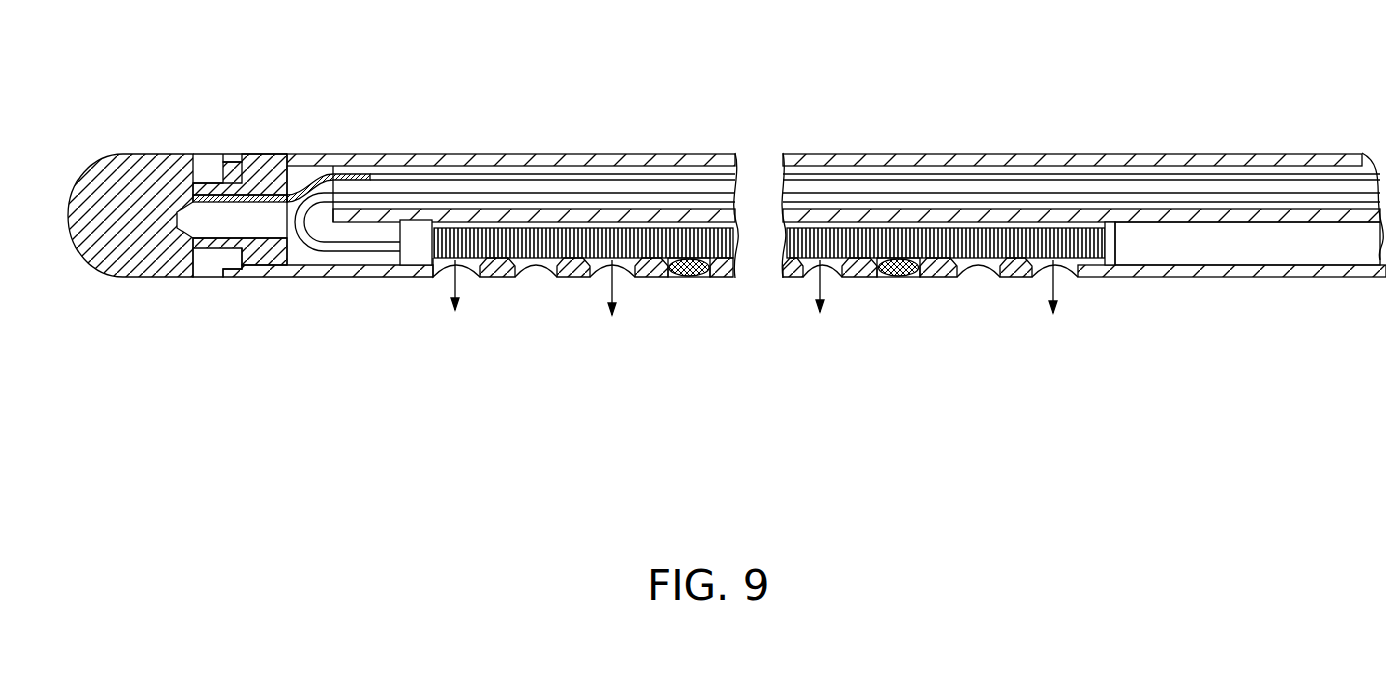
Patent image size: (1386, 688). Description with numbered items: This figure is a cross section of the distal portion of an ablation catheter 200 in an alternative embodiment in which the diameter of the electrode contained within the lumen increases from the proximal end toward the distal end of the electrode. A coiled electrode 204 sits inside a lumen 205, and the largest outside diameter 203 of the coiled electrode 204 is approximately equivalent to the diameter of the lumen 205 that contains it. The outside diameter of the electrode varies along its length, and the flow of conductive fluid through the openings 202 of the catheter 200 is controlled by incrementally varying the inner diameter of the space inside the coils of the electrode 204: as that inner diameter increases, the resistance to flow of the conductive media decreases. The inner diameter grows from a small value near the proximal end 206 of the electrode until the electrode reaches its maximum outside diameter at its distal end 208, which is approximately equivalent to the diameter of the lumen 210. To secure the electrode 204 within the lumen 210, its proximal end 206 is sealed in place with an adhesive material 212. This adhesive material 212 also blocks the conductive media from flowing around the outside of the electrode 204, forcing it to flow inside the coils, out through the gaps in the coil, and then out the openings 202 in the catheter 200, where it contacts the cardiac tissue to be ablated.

The ablation catheter 200 is at (674, 100).
The openings 202 is at (977, 280).
The largest outside diameter 203 is at (440, 267).
The coiled electrode 204 is at (726, 252).
The lumen 205 is at (592, 227).
The proximal end 206 is at (1118, 262).
The distal end 208 is at (445, 228).
The lumen 210 is at (931, 228).
The adhesive material 212 is at (1104, 223).